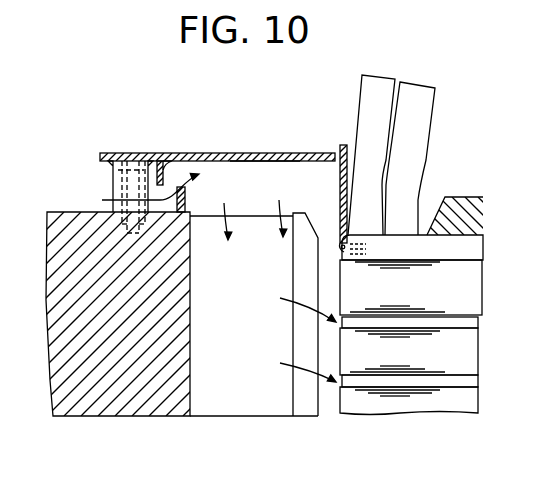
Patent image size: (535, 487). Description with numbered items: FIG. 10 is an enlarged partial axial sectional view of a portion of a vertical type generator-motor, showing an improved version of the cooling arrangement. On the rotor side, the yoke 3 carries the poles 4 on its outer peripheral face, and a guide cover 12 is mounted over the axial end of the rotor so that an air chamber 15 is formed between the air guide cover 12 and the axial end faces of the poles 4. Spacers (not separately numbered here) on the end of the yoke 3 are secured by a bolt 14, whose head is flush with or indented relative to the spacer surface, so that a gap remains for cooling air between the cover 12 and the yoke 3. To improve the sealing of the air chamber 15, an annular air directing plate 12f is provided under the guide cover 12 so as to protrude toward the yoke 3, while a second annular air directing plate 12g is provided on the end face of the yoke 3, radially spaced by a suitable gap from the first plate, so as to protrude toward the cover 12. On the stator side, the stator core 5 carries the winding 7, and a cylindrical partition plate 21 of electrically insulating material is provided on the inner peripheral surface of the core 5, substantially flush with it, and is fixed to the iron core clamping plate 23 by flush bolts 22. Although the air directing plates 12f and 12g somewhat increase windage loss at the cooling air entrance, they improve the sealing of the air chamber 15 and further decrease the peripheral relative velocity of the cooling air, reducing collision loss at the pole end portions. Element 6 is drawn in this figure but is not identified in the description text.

The yoke 3 is at (142, 407).
The poles 4 is at (305, 407).
The stator core 5 is at (385, 407).
The ring groove 6 is at (450, 383).
The winding 7 is at (430, 118).
The guide cover 12 is at (278, 153).
The annular air directing plate 12f is at (172, 153).
The annular air directing plate 12g is at (186, 197).
The bolt 14 is at (137, 153).
The air chamber 15 is at (257, 167).
The cylindrical partition plate 21 is at (340, 145).
The flush bolts 22 is at (340, 244).
The iron core clamping plate 23 is at (427, 214).